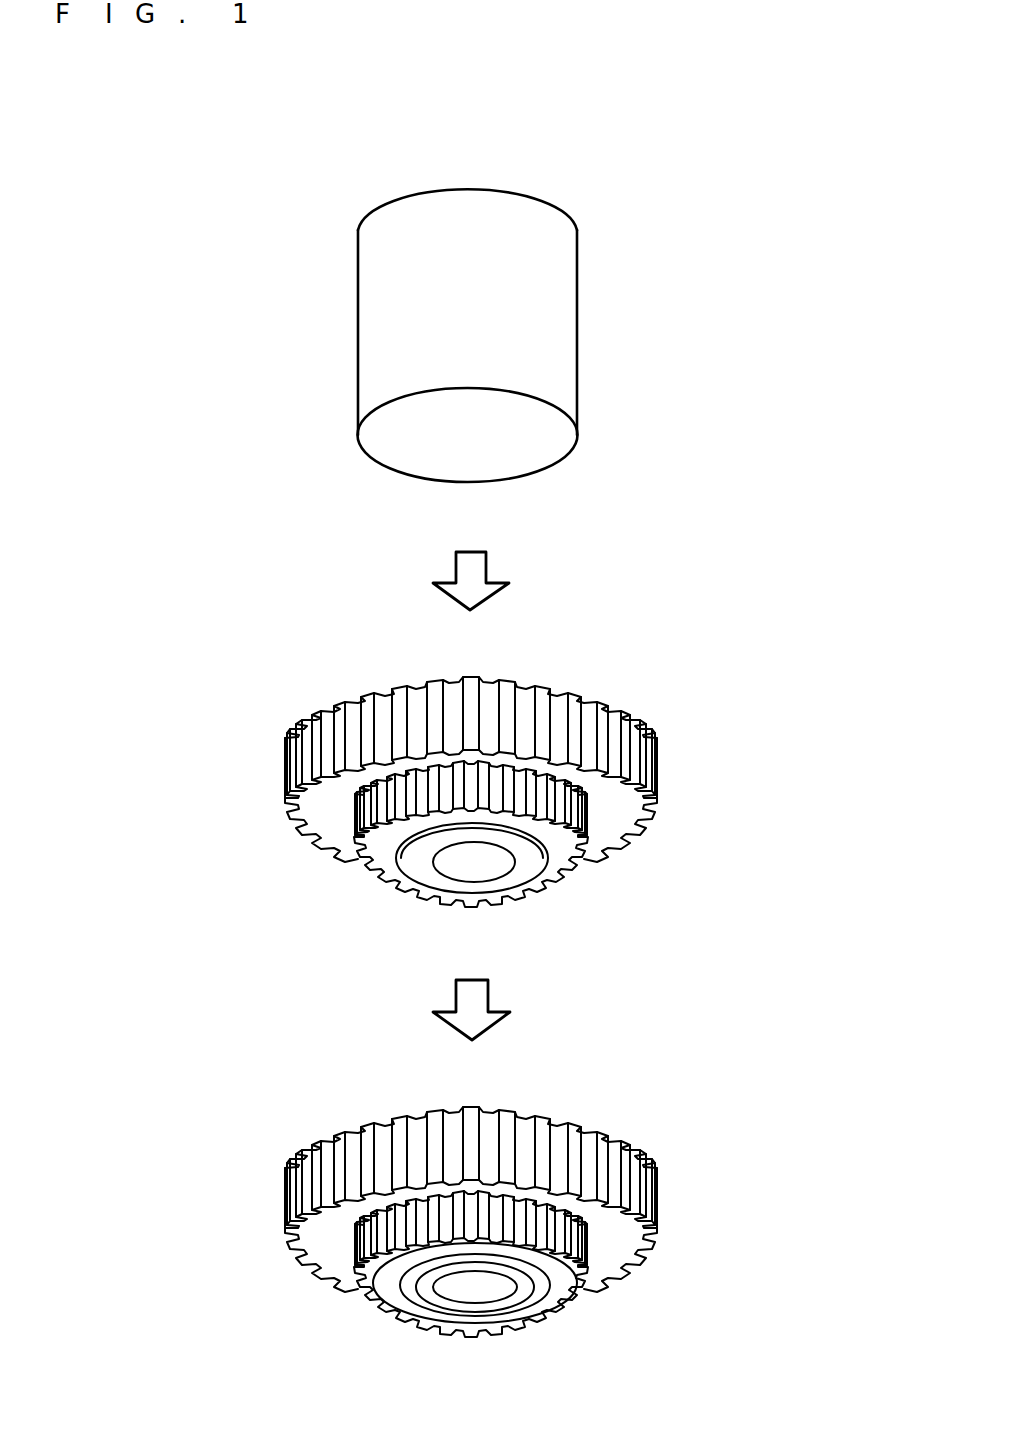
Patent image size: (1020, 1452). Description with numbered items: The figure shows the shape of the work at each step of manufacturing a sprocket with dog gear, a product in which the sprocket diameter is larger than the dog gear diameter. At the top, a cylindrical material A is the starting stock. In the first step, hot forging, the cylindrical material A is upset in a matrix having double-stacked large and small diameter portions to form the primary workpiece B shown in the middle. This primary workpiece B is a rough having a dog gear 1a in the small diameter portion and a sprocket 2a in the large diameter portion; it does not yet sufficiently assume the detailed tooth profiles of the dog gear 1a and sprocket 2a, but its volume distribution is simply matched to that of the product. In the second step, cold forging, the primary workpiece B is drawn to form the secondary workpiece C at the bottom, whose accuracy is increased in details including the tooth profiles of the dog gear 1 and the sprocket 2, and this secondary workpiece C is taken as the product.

The cylindrical material A is at (625, 303).
The primary workpiece B is at (649, 666).
The secondary workpiece C is at (644, 1089).
The sprocket 2a is at (637, 763).
The dog gear 1a is at (598, 814).
The sprocket 2 is at (640, 1188).
The dog gear 1 is at (598, 1236).